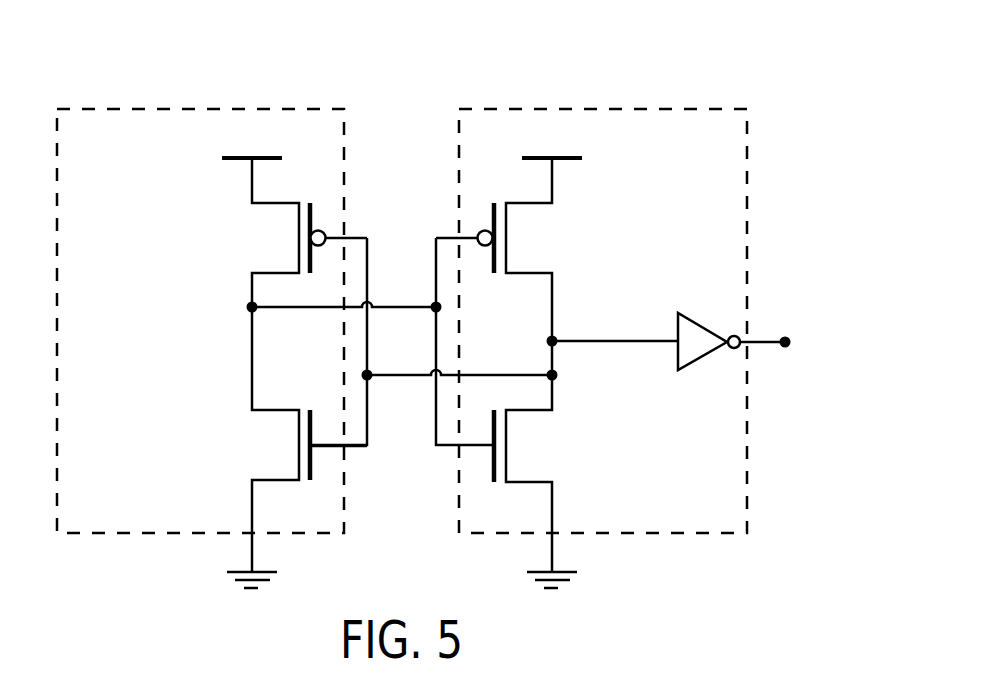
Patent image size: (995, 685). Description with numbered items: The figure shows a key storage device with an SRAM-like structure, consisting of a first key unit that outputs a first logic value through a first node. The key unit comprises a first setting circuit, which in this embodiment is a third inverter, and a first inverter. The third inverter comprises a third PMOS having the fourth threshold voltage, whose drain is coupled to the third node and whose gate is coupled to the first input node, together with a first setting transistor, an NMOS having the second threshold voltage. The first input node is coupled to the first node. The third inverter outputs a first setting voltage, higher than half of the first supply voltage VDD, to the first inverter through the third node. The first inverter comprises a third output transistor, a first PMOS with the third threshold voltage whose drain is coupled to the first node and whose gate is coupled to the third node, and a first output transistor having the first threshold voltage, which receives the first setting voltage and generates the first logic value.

The first supply voltage VDD is at (401, 158).